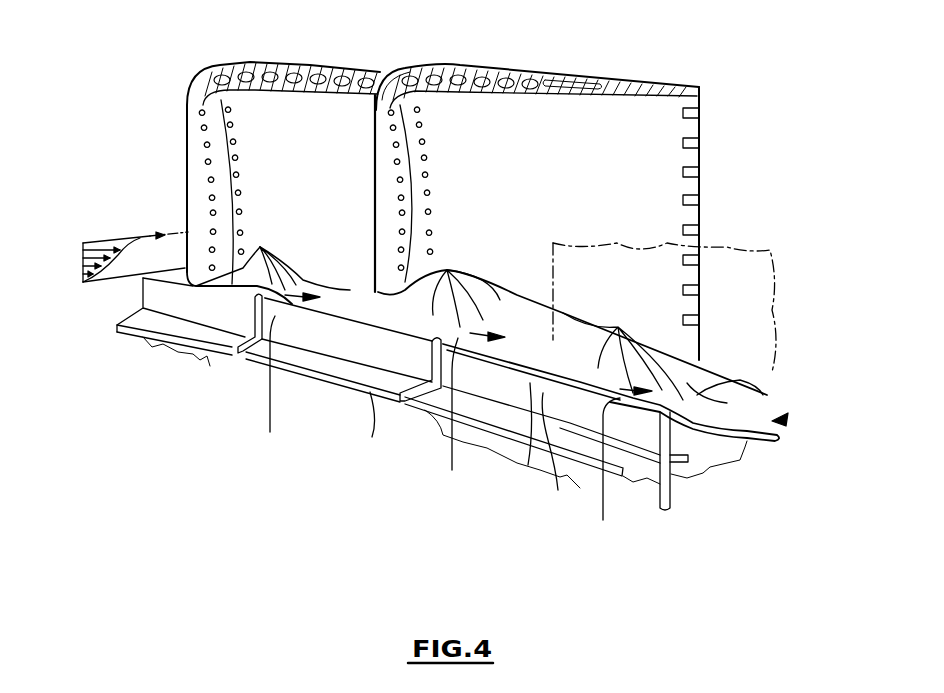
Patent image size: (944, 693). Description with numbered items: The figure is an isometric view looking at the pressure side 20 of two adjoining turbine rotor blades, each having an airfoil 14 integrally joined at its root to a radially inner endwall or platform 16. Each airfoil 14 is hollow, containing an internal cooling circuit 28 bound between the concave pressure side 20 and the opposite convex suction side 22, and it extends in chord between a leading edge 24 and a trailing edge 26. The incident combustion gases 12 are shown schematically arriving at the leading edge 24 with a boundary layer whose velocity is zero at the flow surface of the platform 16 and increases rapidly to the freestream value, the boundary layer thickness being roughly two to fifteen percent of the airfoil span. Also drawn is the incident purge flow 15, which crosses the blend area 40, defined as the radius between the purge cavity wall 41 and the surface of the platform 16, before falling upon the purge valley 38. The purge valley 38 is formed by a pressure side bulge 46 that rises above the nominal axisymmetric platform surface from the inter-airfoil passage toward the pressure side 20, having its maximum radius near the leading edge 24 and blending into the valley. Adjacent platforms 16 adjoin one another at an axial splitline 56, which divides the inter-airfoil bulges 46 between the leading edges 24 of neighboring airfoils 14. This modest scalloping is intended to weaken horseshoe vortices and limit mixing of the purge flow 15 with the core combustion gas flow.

The combustion gases 12 is at (150, 236).
The airfoil 14 is at (727, 248).
The purge flow 15 is at (270, 413).
The platform 16 is at (410, 402).
The pressure side 20 is at (531, 184).
The suction side 22 is at (505, 71).
The leading edge 24 is at (197, 134).
The trailing edge 26 is at (699, 129).
The internal cooling circuit 28 is at (449, 72).
The purge valley 38 is at (702, 358).
The blend area 40 is at (352, 282).
The purge cavity wall 41 is at (372, 420).
The pressure side bulge 46 is at (260, 247).
The axial splitline 56 is at (256, 316).